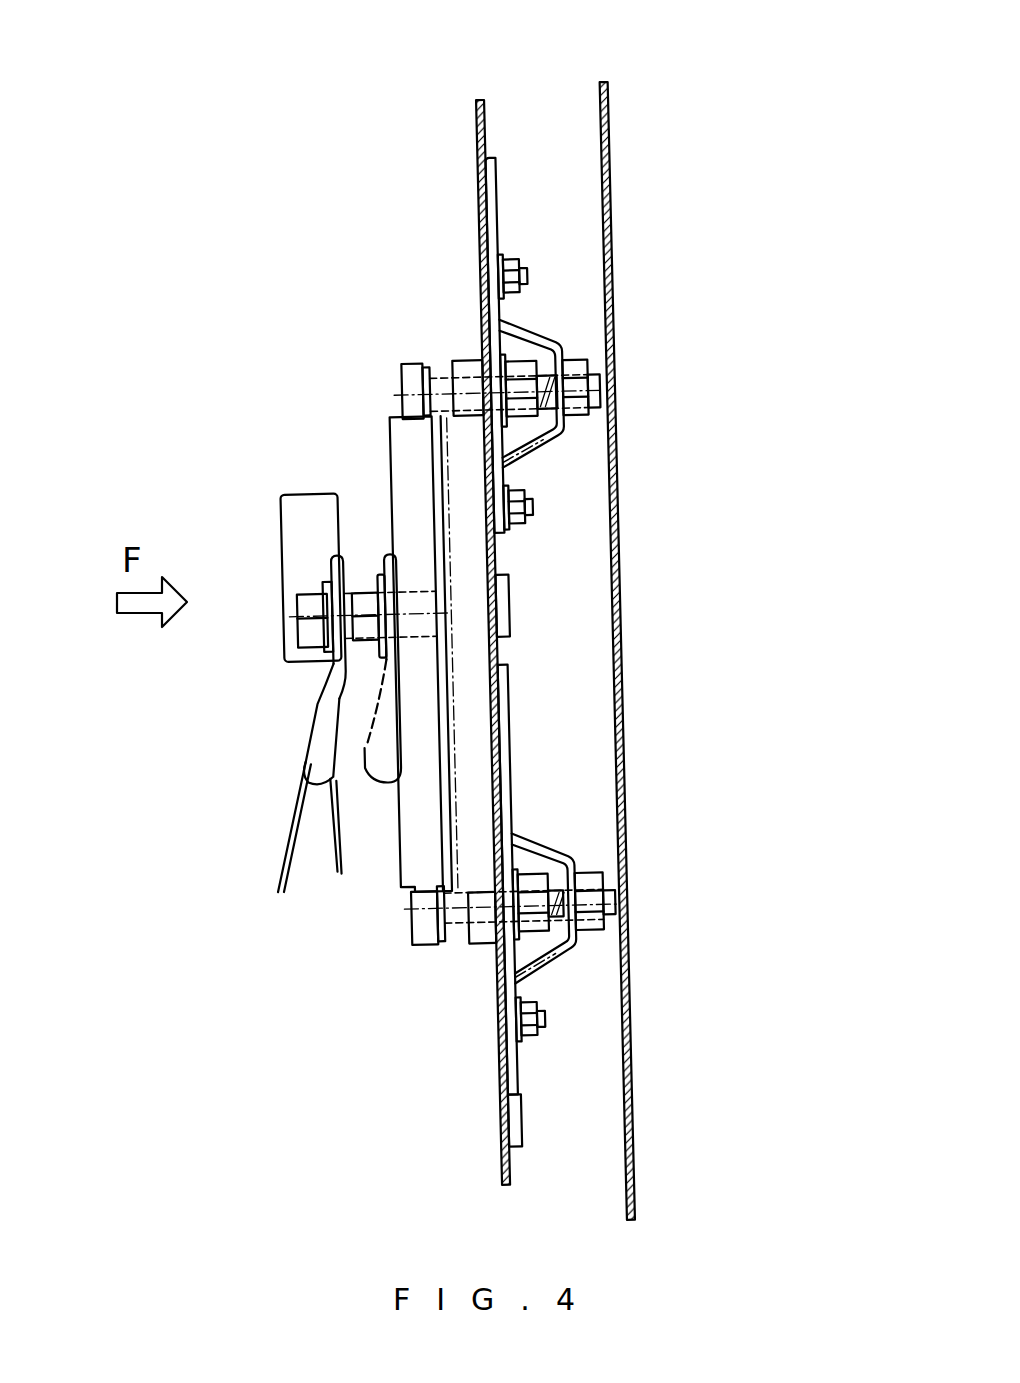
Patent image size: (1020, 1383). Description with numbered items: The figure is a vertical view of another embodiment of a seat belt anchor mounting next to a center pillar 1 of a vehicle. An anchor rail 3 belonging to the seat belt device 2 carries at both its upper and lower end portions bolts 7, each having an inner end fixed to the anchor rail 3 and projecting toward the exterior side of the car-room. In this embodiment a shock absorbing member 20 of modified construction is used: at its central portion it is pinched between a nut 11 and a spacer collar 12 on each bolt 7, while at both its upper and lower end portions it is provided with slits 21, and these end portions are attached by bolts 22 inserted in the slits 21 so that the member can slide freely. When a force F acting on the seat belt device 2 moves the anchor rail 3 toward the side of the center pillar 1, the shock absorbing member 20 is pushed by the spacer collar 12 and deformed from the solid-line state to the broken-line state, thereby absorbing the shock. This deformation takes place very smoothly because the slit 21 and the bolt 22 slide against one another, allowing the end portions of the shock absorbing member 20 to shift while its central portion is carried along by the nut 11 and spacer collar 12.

The center pillar 1 is at (543, 82).
The seat belt device 2 is at (300, 426).
The anchor rail 3 is at (403, 462).
The bolt 7 is at (520, 430).
The nut 11 is at (517, 362).
The spacer collar 12 is at (445, 372).
The shock absorbing member 20 is at (500, 178).
The slit 21 is at (492, 214).
The bolt 22 is at (528, 273).